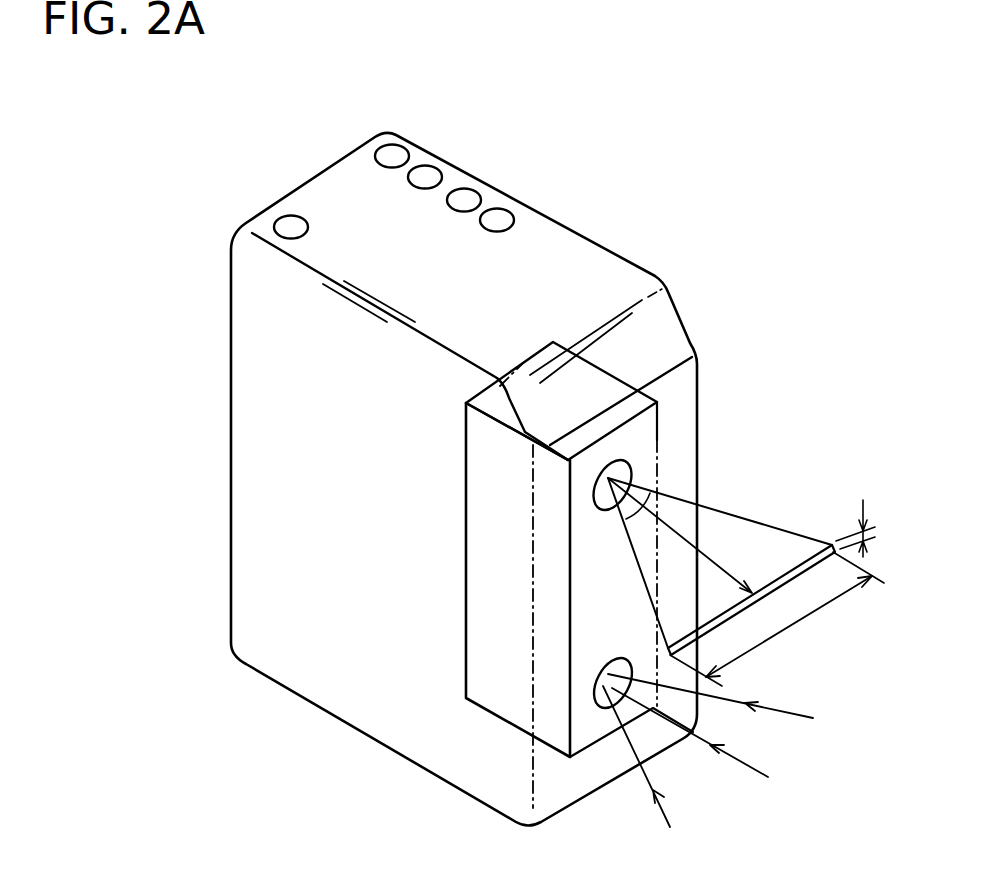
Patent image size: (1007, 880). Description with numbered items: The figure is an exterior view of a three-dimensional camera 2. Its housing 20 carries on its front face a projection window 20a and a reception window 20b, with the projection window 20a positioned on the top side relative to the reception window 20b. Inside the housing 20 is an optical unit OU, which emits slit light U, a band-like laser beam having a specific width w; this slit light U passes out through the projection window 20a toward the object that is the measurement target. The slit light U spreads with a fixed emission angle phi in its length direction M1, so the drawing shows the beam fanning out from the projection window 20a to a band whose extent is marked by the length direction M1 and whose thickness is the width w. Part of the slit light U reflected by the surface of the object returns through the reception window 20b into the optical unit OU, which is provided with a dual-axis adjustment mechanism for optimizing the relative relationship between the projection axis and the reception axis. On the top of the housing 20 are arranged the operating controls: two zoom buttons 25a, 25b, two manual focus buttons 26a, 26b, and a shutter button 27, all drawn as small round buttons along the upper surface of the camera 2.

The three-dimensional camera 2 is at (776, 209).
The housing 20 is at (690, 329).
The projection window 20a is at (632, 466).
The reception window 20b is at (597, 710).
The zoom button 25a is at (392, 145).
The zoom button 25b is at (428, 166).
The manual focus button 26a is at (470, 190).
The manual focus button 26b is at (508, 212).
The shutter button 27 is at (283, 216).
The slit light U is at (737, 537).
The width w is at (865, 528).
The length direction M1 is at (777, 619).
The optical unit OU is at (477, 707).
The emission angle phi is at (630, 525).